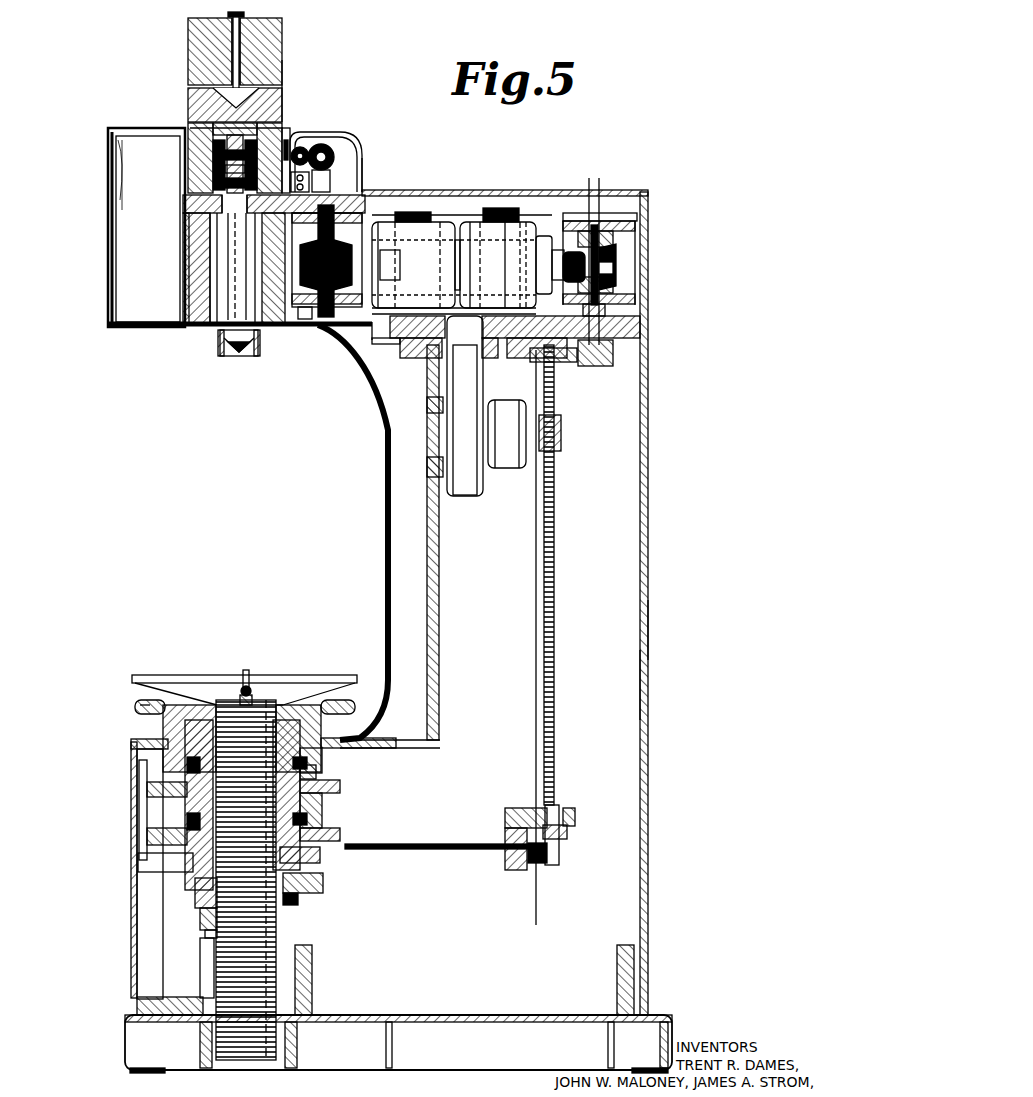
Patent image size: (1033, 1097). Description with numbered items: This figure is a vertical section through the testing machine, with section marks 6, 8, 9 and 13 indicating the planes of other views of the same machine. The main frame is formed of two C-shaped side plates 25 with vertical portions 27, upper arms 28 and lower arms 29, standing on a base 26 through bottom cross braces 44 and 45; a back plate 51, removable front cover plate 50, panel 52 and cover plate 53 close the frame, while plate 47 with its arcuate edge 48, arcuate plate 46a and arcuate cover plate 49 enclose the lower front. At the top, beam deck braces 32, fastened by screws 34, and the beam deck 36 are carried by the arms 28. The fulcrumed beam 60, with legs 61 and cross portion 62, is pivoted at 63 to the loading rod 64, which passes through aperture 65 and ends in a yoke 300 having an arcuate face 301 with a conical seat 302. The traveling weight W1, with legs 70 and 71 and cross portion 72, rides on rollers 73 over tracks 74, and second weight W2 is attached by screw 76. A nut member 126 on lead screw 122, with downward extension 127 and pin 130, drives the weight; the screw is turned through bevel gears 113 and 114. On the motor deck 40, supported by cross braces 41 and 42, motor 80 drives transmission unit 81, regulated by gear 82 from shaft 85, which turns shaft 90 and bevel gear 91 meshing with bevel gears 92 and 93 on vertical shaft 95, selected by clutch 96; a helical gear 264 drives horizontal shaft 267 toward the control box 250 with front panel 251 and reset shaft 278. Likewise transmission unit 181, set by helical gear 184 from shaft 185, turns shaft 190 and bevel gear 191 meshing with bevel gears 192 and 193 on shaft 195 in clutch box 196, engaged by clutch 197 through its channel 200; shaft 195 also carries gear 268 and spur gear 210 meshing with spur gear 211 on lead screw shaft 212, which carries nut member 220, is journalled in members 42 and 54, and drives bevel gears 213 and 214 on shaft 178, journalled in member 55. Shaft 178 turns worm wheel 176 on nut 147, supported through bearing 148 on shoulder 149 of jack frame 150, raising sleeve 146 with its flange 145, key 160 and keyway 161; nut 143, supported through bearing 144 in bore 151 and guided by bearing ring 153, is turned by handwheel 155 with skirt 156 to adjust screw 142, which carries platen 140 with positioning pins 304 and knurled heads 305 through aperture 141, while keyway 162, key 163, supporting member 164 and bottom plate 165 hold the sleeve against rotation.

The second weight W2 is at (191, 27).
The traveling weight W1 is at (205, 92).
The section line 13 is at (238, 7).
The screw 76 is at (244, 42).
The cross portion 72 is at (284, 82).
The fulcrumed beam 60 is at (290, 100).
The anti-friction rollers 73 is at (284, 118).
The laterally projecting pin 130 is at (302, 148).
The nut member 126 is at (298, 172).
The horizontal lead screw 122 is at (328, 146).
The cross portion 62 is at (215, 100).
The leg 70 is at (285, 140).
The bevel gear 114 is at (330, 138).
The bevel gear 113 is at (363, 152).
The leg 71 is at (195, 135).
The downward extension 127 is at (332, 168).
The beam deck 36 is at (374, 192).
The shaft 85 is at (402, 212).
The gear 82 is at (464, 222).
The variable speed drive transmission unit 81 is at (472, 222).
The shaft 185 is at (490, 208).
The variable speed drive transmission unit 181 is at (506, 215).
The helical gear 184 is at (527, 216).
The loading weight drive motor 80 is at (547, 236).
The bevel gear 191 is at (594, 214).
The shaft 190 is at (568, 250).
The removable cover plate 53 is at (606, 215).
The section line 8 is at (593, 178).
The vertical shaft 195 is at (616, 224).
The clutch box 196 is at (632, 230).
The section line 6 is at (648, 194).
The tracks 74 is at (200, 160).
The pivotal connection 63 is at (225, 164).
The legs 61 is at (200, 180).
The bevel gear 91 is at (380, 230).
The shaft 90 is at (374, 238).
The bevel gear 192 is at (614, 250).
The annular channel 200 is at (614, 262).
The solenoid operated clutch 197 is at (620, 268).
The bevel gear 193 is at (615, 281).
The gear 268 is at (606, 308).
The removable panel 52 is at (648, 328).
The beam deck braces 32 is at (195, 226).
The bevel gear 92 is at (270, 265).
The clutch 96 is at (272, 283).
The vertical shaft 95 is at (272, 299).
The bevel gear 93 is at (376, 282).
The reset shaft 278 is at (113, 272).
The screws 34 is at (188, 310).
The front panel 251 is at (110, 312).
The control box 250 is at (160, 327).
The loading rod 64 is at (232, 322).
The yoke 300 is at (236, 342).
The arcuate lower face 301 is at (244, 348).
The conical depression 302 is at (241, 356).
The aperture 65 is at (272, 328).
The horizontal shaft 267 is at (305, 330).
The helical gear 264 is at (330, 330).
The upper arms 28 is at (360, 342).
The motor deck 40 is at (372, 350).
The cross brace 41 is at (428, 348).
The cross brace 42 is at (484, 346).
The spur gear 211 is at (568, 364).
The spur gear 210 is at (614, 368).
The nut member 220 is at (562, 428).
The lead screw shaft 212 is at (556, 490).
The removable front cover plate 50 is at (385, 492).
The vertically disposed portions 27 is at (625, 508).
The C-shaped side plates 25 is at (620, 636).
The back plate 51 is at (648, 684).
The circular platen 140 is at (150, 676).
The knurled heads 305 is at (244, 686).
The nut member 143 is at (225, 700).
The positioning pins 304 is at (250, 668).
The vertical screw 142 is at (266, 712).
The handwheel 155 is at (140, 705).
The bearing ring 153 is at (330, 712).
The aperture 141 is at (160, 722).
The key 160 is at (352, 741).
The horizontal plate 47 is at (140, 745).
The arcuate edge 48 is at (132, 752).
The bearing 144 is at (330, 762).
The depending skirt portion 156 is at (325, 770).
The vertical annular bore 151 is at (185, 785).
The head flange 145 is at (322, 785).
The nut member 147 is at (142, 795).
The removable arcuate cover plate 49 is at (130, 816).
The keyway 161 is at (340, 790).
The screw member 146 is at (322, 808).
The worm wheel 176 is at (165, 840).
The bearing 148 is at (340, 830).
The annular shoulder 149 is at (330, 838).
The section line 9 is at (128, 845).
The jack frame 150 is at (322, 868).
The horizontal shaft 178 is at (440, 850).
The horizontally extending member 54 is at (522, 808).
The horizontally extending member 55 is at (508, 840).
The bevel gear 213 is at (568, 830).
The bevel gear 214 is at (548, 856).
The supporting member 164 is at (195, 895).
The keyway 162 is at (200, 915).
The key 163 is at (205, 934).
The lower arms 29 is at (210, 962).
The cross brace 44 is at (313, 975).
The cross brace 45 is at (606, 980).
The arcuate plate 46a is at (140, 1005).
The base 26 is at (672, 1020).
The bottom plate 165 is at (292, 895).